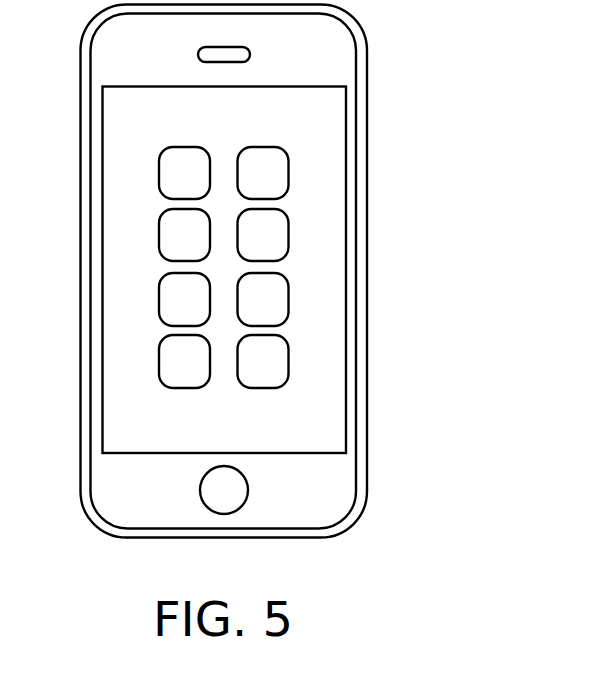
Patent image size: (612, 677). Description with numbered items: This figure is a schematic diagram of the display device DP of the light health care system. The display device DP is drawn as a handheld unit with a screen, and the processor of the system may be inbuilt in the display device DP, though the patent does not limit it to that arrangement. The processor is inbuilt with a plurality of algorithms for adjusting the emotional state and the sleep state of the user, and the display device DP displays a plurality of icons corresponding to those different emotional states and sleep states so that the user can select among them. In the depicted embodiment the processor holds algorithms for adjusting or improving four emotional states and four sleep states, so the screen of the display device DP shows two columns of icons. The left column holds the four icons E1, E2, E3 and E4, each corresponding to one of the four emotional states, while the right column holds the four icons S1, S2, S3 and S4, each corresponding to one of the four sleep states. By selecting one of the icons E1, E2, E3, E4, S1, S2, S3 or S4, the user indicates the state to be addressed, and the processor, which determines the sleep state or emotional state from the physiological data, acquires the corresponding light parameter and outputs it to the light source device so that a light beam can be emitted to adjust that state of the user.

The display device DP is at (482, 572).
The icon E1 is at (184, 173).
The icon E2 is at (184, 235).
The icon E3 is at (184, 299).
The icon E4 is at (184, 361).
The icon S1 is at (263, 173).
The icon S2 is at (263, 235).
The icon S3 is at (263, 299).
The icon S4 is at (263, 361).